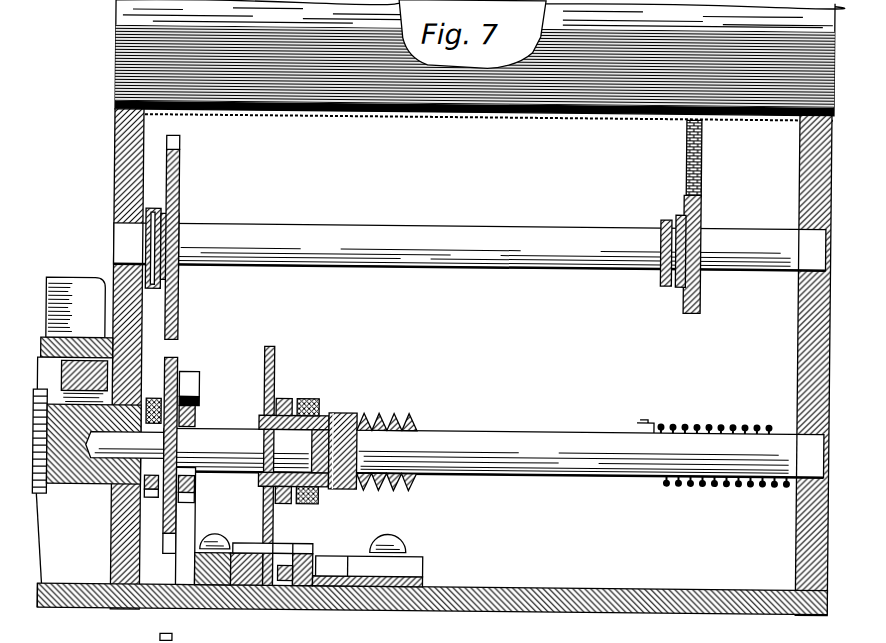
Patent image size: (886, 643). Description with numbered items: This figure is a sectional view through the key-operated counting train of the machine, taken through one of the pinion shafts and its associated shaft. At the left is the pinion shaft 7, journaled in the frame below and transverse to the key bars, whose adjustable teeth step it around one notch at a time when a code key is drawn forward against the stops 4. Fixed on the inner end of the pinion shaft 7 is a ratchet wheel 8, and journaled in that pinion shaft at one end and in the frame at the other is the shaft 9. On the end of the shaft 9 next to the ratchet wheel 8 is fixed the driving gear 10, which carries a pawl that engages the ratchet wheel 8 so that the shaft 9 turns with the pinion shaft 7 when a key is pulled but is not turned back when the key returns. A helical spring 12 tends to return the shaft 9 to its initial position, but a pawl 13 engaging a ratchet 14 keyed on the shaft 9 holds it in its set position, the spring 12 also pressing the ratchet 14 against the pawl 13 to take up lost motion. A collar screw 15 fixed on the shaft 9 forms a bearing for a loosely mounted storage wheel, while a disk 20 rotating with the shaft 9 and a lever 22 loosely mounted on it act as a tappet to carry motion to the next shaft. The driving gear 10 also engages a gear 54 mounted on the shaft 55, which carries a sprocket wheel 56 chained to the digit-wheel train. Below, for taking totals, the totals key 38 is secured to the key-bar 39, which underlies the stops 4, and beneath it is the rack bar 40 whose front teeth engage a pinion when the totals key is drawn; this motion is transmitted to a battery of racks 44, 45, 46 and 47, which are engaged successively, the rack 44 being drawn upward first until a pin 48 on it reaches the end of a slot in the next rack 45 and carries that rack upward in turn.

The stops 4 is at (86, 345).
The pinion shaft 7 is at (48, 494).
The ratchet wheel 8 is at (154, 401).
The shaft 9 is at (531, 431).
The driving gear 10 is at (180, 357).
The helical spring 12 is at (718, 421).
The pawl 13 is at (203, 380).
The ratchet 14 is at (196, 418).
The collar screw 15 is at (347, 414).
The disk 20 is at (270, 348).
The lever 22 is at (300, 400).
The totals key 38 is at (76, 307).
The key-bar 39 is at (80, 312).
The rack bar 40 is at (75, 386).
The rack 44 is at (322, 587).
The rack 45 is at (283, 587).
The rack 46 is at (258, 585).
The rack 47 is at (225, 585).
The pin 48 is at (290, 585).
The gear 54 is at (180, 162).
The shaft 55 is at (430, 226).
The sprocket wheel 56 is at (700, 214).